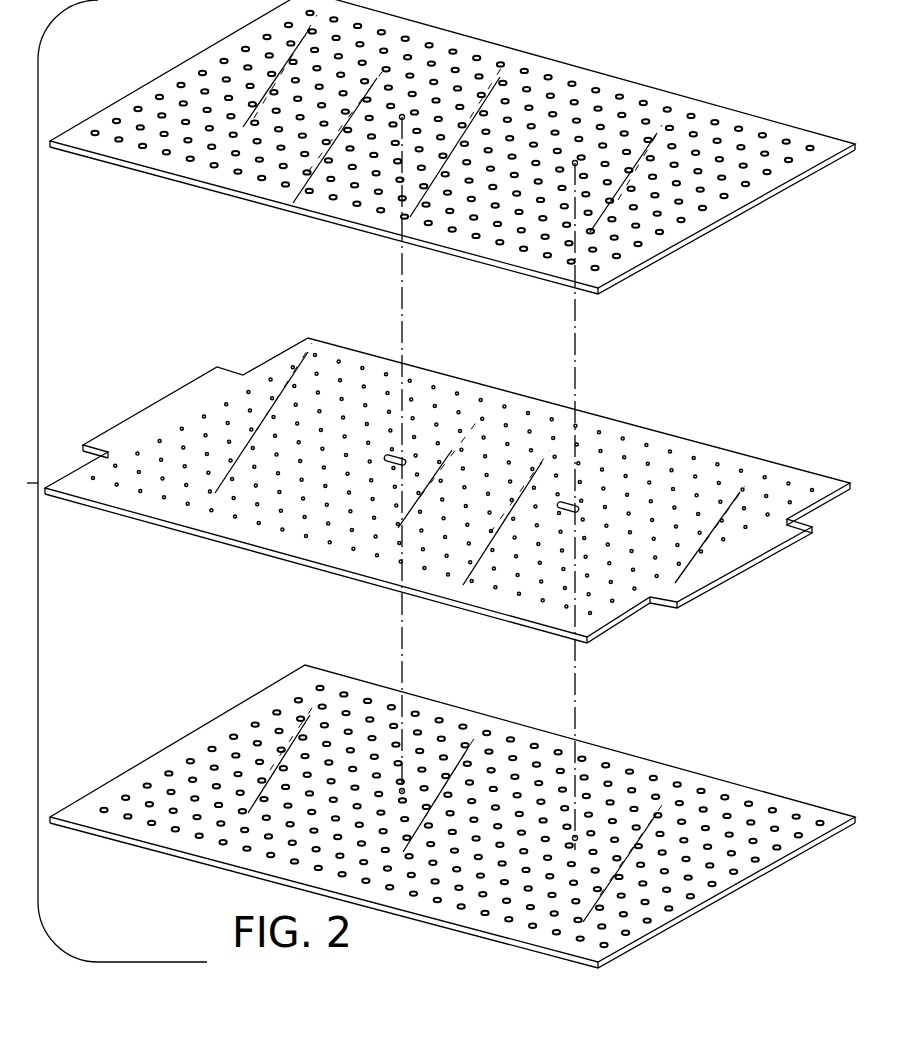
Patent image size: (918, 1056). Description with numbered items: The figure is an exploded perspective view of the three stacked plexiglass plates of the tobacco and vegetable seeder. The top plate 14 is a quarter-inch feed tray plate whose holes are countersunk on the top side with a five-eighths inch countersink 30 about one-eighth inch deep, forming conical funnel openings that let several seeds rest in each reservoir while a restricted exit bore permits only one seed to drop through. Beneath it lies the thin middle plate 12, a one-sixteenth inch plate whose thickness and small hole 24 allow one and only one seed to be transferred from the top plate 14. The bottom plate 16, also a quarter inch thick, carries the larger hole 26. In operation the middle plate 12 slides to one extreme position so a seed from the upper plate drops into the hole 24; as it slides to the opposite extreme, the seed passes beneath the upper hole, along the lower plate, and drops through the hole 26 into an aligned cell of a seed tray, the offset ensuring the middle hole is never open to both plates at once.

The middle plate 12 is at (740, 571).
The top plate 14 is at (654, 247).
The bottom plate 16 is at (783, 806).
The hole in the middle plate 24 is at (738, 471).
The hole in the bottom plate 26 is at (699, 788).
The countersink 30 is at (667, 105).